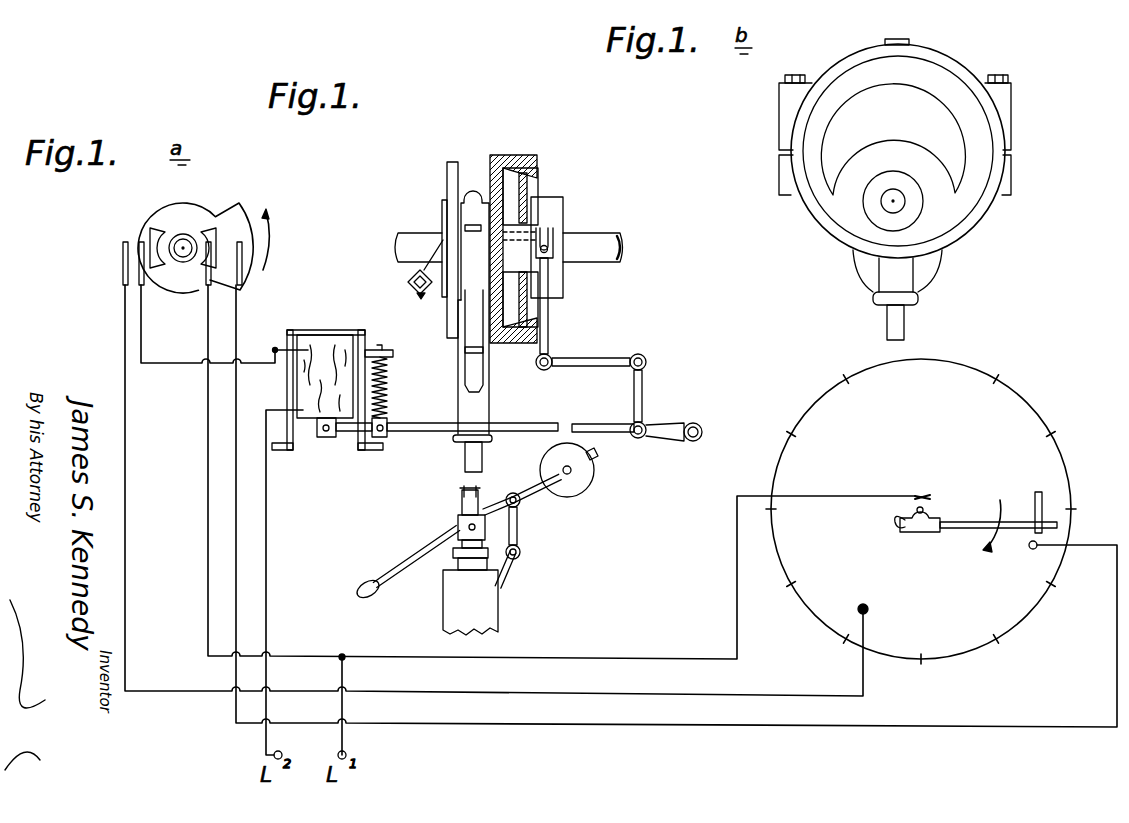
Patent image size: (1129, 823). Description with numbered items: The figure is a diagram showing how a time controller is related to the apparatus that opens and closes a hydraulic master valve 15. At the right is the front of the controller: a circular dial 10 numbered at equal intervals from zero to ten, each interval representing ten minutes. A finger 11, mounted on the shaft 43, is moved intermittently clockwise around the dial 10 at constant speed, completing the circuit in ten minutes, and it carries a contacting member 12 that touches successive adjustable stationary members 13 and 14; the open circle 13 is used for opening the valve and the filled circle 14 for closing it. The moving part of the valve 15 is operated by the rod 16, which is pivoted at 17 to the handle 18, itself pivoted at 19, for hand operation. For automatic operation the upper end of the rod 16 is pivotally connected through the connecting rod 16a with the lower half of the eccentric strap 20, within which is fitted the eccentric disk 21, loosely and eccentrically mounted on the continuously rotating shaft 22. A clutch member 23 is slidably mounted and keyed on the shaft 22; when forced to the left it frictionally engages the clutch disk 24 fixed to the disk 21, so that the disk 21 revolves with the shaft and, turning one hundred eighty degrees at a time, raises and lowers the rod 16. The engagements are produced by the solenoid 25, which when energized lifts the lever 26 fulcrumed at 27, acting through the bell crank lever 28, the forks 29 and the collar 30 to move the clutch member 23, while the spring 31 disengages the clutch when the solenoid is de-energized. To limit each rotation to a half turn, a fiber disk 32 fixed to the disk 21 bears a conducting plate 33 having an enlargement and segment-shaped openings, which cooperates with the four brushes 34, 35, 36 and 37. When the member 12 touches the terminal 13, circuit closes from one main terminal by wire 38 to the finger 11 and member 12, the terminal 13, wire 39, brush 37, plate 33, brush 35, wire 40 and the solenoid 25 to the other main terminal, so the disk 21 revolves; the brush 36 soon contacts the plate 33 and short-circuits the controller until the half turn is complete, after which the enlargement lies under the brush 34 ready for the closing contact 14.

In FIG. 1, the circular dial 10 is at (955, 362).
In FIG. 1, the finger 11 is at (963, 525).
In FIG. 1, the contacting member 12 is at (1035, 492).
In FIG. 1, the stationary contact member 13 is at (1031, 550).
In FIG. 1, the stationary contact member 14 is at (868, 602).
In FIG. 1, the hydraulic master valve 15 is at (485, 602).
In FIG. 1, the operating rod 16 is at (492, 555).
In FIG. 1, the connecting rod 16a is at (480, 460).
In FIG. 1, the pivot 17 is at (457, 528).
In FIG. 1, the handle 18 is at (366, 583).
In FIG. 1, the pivot 19 is at (522, 505).
In FIG. 1, the eccentric strap 20 is at (478, 412).
In FIG. 1B, the eccentric strap 20 is at (942, 252).
In FIG. 1B, the eccentric disk 21 is at (920, 172).
In FIG. 1, the shaft 22 is at (620, 239).
In FIG. 1, the clutch member 23 is at (540, 176).
In FIG. 1, the clutch disk 24 is at (508, 160).
In FIG. 1, the electro-magnetic solenoid 25 is at (318, 347).
In FIG. 1, the lever 26 is at (432, 432).
In FIG. 1, the fulcrum 27 is at (697, 424).
In FIG. 1, the bell crank lever 28 is at (601, 365).
In FIG. 1, the forks 29 is at (549, 333).
In FIG. 1, the collar 30 is at (558, 208).
In FIG. 1, the spring 31 is at (387, 388).
In FIG. 1, the fiber disk 32 is at (447, 183).
In FIG. 1A, the conducting plate 33 is at (192, 212).
In FIG. 1, the conducting plate 33 is at (442, 212).
In FIG. 1A, the contact brush 34 is at (123, 258).
In FIG. 1A, the contact brush 35 is at (142, 270).
In FIG. 1A, the contact brush 36 is at (210, 267).
In FIG. 1A, the contact brush 37 is at (242, 275).
In FIG. 1, the wire 38 is at (382, 657).
In FIG. 1, the wire 39 is at (790, 728).
In FIG. 1A, the wire 40 is at (182, 365).
In FIG. 1, the shaft 43 is at (923, 497).